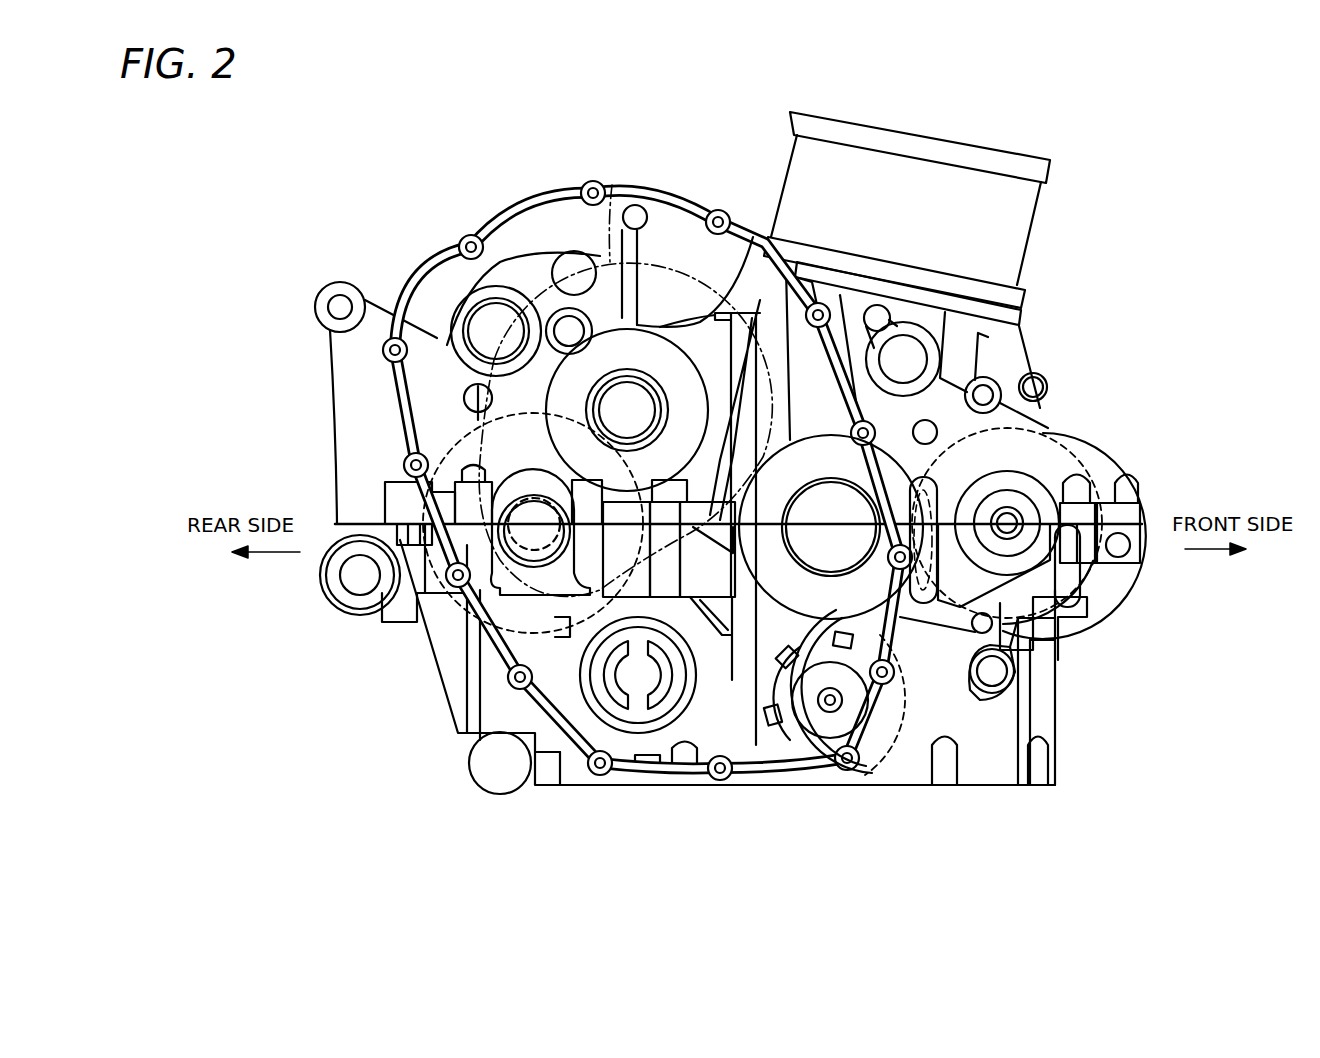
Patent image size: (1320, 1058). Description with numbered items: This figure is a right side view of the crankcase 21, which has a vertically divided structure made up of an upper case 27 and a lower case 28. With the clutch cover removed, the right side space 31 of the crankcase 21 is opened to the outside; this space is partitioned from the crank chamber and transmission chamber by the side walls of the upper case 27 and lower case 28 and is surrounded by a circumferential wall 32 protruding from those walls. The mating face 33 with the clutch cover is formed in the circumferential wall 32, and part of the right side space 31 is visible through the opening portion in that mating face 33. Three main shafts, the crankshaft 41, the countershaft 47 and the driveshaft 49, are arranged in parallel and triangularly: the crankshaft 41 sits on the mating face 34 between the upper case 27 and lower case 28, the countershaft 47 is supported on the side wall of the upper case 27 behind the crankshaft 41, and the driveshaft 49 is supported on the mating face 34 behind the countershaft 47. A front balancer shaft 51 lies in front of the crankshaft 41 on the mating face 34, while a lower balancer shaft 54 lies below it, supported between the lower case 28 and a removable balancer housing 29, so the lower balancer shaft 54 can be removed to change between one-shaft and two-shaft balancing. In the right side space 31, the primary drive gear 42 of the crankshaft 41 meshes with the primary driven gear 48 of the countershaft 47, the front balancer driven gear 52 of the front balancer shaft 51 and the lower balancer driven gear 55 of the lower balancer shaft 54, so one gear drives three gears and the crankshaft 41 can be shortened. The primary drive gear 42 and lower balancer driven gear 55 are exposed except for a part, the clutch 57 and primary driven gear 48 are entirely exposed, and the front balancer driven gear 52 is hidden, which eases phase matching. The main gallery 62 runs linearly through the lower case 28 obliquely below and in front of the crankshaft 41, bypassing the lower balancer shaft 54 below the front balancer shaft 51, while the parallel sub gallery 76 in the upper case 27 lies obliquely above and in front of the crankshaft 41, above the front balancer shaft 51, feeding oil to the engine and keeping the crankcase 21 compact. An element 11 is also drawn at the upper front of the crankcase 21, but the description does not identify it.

The intake pipe 11 is at (1017, 217).
The crankcase 21 is at (1058, 312).
The upper case 27 is at (1048, 428).
The lower case 28 is at (1048, 705).
The balancer housing 29 is at (832, 800).
The right side space 31 is at (527, 647).
The circumferential wall 32 is at (520, 698).
The mating face 33 is at (573, 750).
The mating face 34 is at (752, 310).
The crankshaft 41 is at (842, 498).
The primary drive gear 42 is at (800, 480).
The countershaft 47 is at (640, 430).
The primary driven gear 48 is at (612, 185).
The driveshaft 49 is at (430, 416).
The front balancer shaft 51 is at (1017, 490).
The front balancer driven gear 52 is at (1095, 443).
The lower balancer shaft 54 is at (813, 717).
The lower balancer driven gear 55 is at (708, 760).
The clutch 57 is at (610, 223).
The main gallery 62 is at (992, 670).
The sub gallery 76 is at (993, 385).